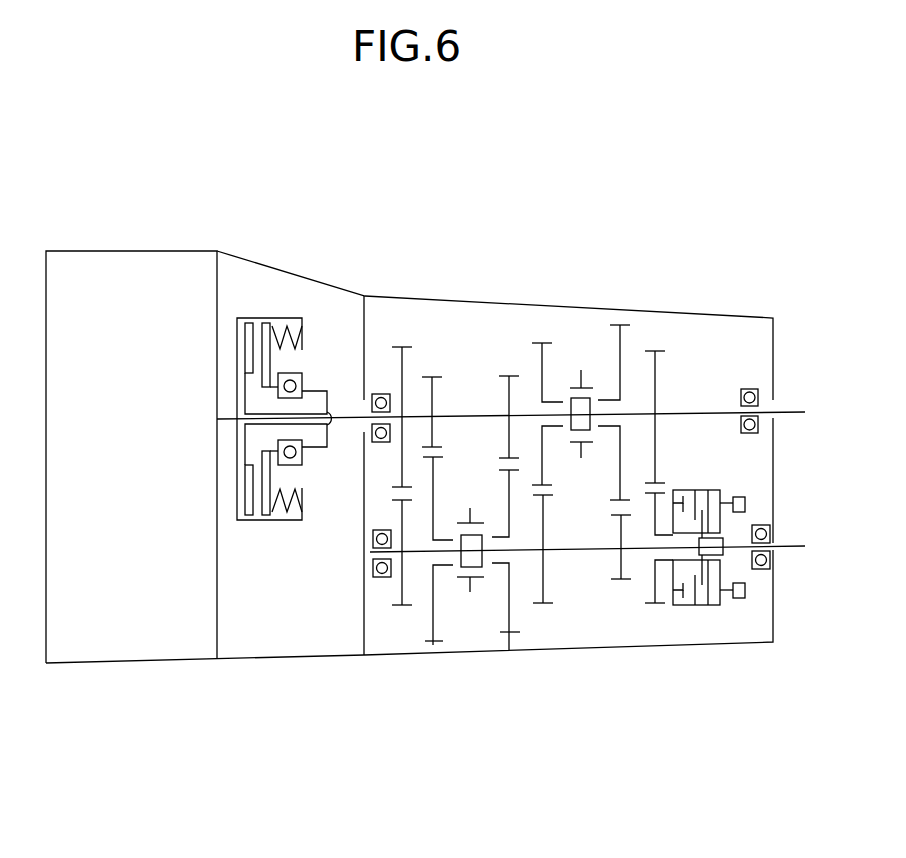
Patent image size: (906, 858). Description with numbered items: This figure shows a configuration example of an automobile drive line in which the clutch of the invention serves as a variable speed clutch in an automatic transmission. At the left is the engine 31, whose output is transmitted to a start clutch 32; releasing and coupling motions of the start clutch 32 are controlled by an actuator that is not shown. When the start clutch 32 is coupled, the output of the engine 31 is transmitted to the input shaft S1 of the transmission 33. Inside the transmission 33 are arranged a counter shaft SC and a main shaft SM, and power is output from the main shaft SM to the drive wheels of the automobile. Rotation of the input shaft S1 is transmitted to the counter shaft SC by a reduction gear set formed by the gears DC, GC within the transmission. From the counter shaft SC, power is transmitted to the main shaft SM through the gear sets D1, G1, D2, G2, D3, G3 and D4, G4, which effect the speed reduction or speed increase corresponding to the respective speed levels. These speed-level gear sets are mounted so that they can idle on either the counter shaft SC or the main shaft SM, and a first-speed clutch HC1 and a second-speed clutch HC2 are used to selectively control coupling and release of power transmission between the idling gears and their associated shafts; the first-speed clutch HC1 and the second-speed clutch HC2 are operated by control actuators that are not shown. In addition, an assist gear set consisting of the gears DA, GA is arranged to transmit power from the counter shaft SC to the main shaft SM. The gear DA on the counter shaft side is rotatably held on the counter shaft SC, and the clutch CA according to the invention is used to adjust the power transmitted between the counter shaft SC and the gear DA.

The engine 31 is at (136, 251).
The start clutch 32 is at (248, 318).
The transmission 33 is at (472, 302).
The input shaft S1 is at (343, 418).
The counter shaft SC is at (796, 548).
The reduction gear DC is at (402, 347).
The reduction gear GC is at (407, 606).
The fourth-speed gear G4 is at (432, 377).
The third-speed gear G3 is at (509, 376).
The second-speed gear G2 is at (542, 343).
The first-speed gear G1 is at (620, 325).
The fourth-speed gear D4 is at (434, 645).
The third-speed gear D3 is at (510, 650).
The second-speed gear D2 is at (545, 606).
The first-speed gear D1 is at (614, 582).
The first-speed clutch HC1 is at (470, 580).
The second-speed clutch HC2 is at (575, 458).
The assist gear GA is at (655, 351).
The assist gear DA is at (657, 606).
The main shaft SM is at (681, 412).
The clutch CA is at (698, 606).